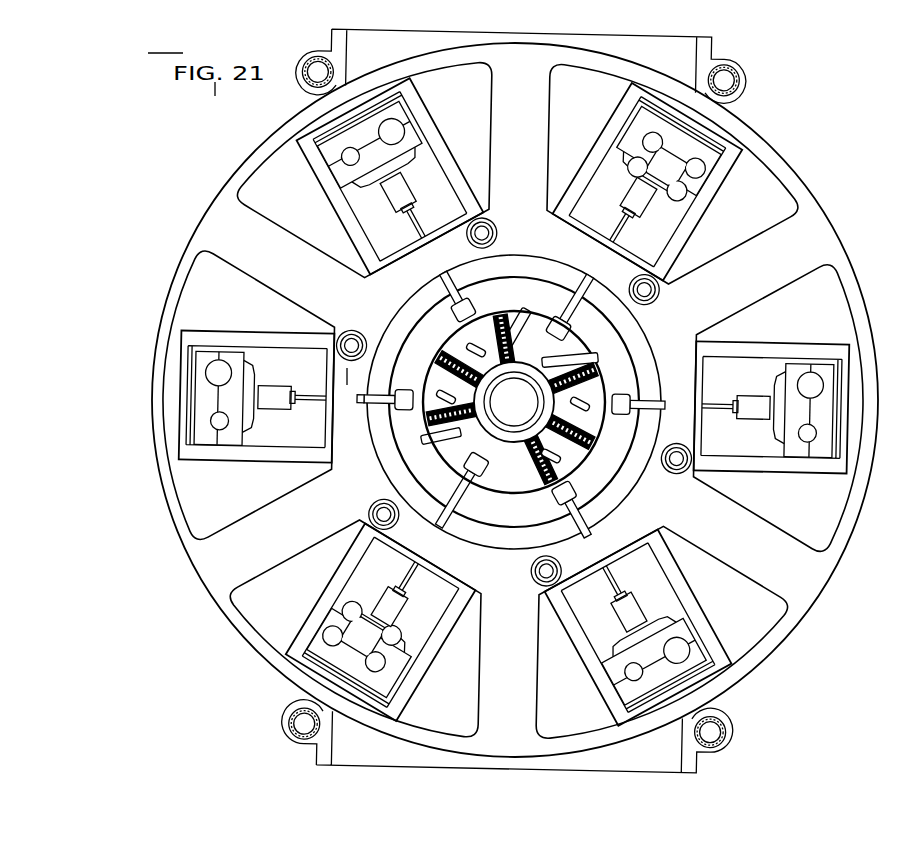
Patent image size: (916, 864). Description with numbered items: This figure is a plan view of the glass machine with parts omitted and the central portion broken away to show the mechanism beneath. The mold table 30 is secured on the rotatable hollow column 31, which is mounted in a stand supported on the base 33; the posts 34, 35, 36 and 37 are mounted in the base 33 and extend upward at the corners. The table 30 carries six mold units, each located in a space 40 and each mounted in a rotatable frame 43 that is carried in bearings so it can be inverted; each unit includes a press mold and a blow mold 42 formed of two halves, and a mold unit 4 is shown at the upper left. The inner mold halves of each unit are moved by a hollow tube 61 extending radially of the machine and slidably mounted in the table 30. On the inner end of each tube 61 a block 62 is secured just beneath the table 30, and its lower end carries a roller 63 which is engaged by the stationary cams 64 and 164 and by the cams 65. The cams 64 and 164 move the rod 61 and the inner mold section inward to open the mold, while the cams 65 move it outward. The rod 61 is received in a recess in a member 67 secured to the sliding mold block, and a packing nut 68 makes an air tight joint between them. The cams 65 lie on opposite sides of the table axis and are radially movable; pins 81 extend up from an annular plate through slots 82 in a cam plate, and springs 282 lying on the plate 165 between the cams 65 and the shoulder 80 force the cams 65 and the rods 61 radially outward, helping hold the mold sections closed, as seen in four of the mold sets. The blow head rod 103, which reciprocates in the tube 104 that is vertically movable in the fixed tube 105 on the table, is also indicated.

The sensor module 4 is at (343, 163).
The mold table 30 is at (215, 218).
The hollow column 31 is at (489, 426).
The base 33 is at (377, 757).
The post 34 is at (290, 733).
The post 35 is at (717, 724).
The post 36 is at (309, 59).
The post 37 is at (742, 73).
The space 40 is at (767, 178).
The blow mold 42 is at (404, 132).
The rotatable frame 43 is at (455, 178).
The hollow tube 61 is at (587, 279).
The block 62 is at (405, 392).
The roller 63 is at (486, 466).
The stationary cam 64 is at (443, 468).
The cam 65 is at (438, 353).
The member 67 is at (623, 205).
The packing nut 68 is at (621, 228).
The shoulder 80 is at (521, 366).
The pin 81 is at (590, 397).
The slot 82 is at (477, 345).
The vertically reciprocable rod 103 is at (351, 337).
The tube 104 is at (372, 402).
The fixed tube 105 is at (344, 336).
The stationary cam 164 is at (587, 320).
The plate 165 is at (447, 377).
The spring 282 is at (598, 357).